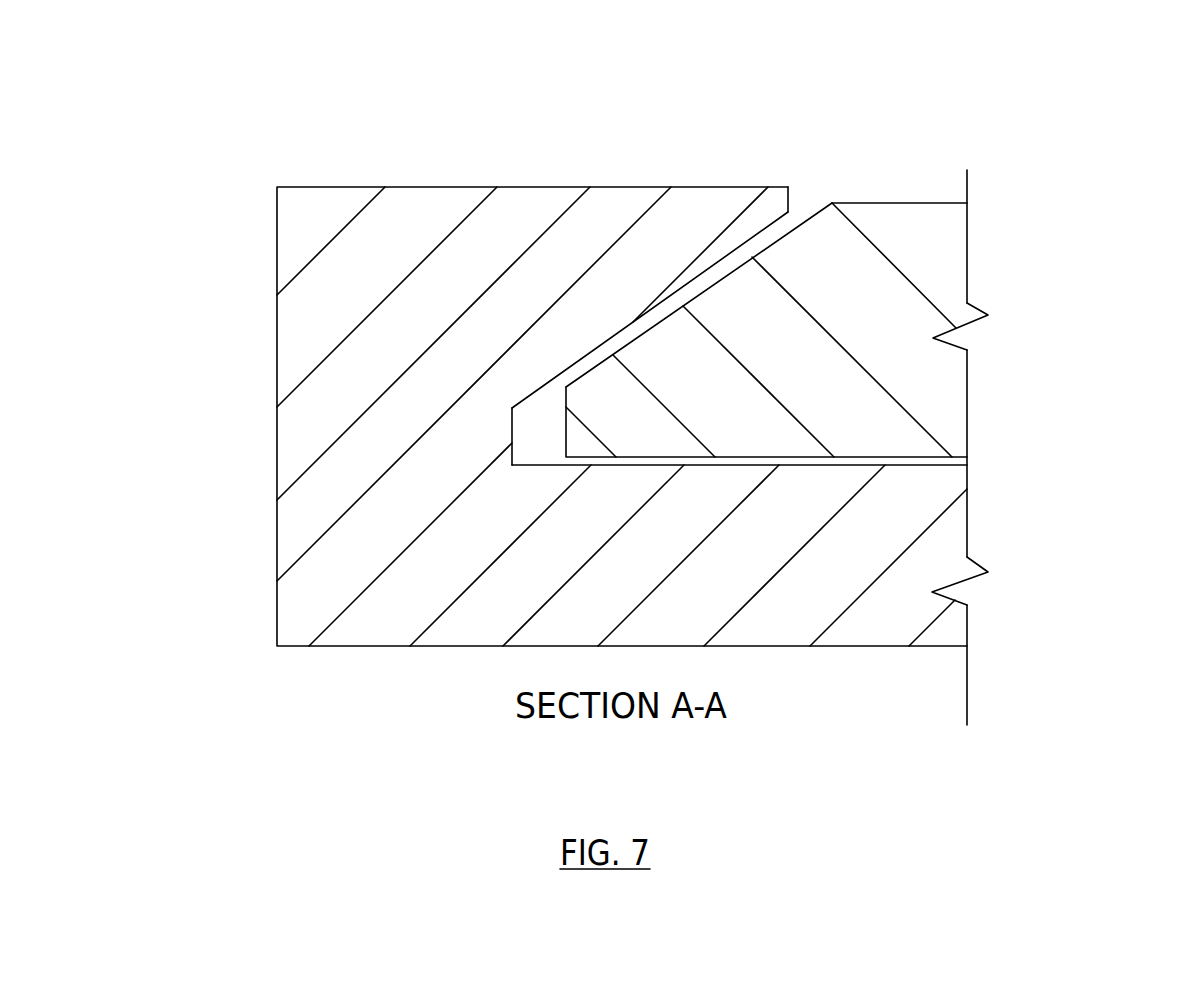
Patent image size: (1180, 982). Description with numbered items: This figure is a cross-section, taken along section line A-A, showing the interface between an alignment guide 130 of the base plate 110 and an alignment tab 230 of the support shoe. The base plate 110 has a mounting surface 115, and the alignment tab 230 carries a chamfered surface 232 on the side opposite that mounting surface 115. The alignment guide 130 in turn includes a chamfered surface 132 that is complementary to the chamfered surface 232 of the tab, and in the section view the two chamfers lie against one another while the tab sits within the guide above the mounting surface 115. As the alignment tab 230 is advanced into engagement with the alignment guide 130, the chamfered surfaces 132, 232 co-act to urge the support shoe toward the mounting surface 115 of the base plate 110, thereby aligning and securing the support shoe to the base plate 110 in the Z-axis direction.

The base plate 110 is at (340, 553).
The alignment guide 130 is at (570, 262).
The chamfered surface 132 is at (705, 270).
The alignment tab 230 is at (928, 270).
The chamfered surface of the alignment tab 232 is at (799, 225).
The mounting surface 115 is at (882, 471).